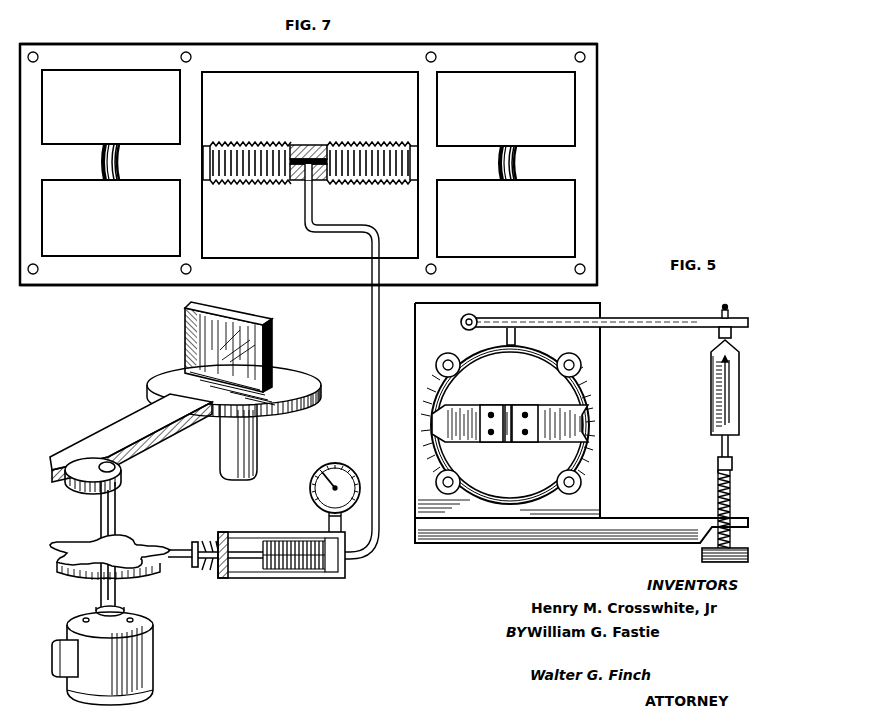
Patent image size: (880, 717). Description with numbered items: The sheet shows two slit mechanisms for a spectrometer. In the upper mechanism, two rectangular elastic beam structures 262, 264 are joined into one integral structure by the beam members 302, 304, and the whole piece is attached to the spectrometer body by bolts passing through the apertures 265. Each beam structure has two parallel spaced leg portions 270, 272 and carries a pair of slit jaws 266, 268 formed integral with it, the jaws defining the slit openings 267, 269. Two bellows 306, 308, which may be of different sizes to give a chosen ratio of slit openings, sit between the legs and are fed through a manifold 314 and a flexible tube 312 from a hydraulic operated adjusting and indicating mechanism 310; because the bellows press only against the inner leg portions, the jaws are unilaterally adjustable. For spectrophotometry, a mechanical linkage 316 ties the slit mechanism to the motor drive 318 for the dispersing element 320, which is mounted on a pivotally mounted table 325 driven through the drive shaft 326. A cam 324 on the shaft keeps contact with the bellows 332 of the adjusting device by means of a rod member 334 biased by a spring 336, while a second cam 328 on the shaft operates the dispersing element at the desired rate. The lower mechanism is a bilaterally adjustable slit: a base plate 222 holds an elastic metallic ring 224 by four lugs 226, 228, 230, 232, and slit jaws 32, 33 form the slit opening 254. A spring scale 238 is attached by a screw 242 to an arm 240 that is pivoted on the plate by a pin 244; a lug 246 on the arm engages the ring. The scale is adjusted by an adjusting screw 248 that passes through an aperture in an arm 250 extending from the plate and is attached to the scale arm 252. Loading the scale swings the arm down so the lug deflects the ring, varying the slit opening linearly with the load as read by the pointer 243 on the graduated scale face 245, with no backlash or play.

In FIG. 7, the apertures 265 is at (181, 57).
In FIG. 7, the beam member 302 is at (330, 63).
In FIG. 7, the beam member 304 is at (330, 278).
In FIG. 7, the slit jaws 266 is at (103, 162).
In FIG. 7, the slit opening 267 is at (110, 145).
In FIG. 7, the slit jaws 268 is at (120, 162).
In FIG. 7, the slit opening 269 is at (504, 146).
In FIG. 7, the leg portion 270 is at (42, 207).
In FIG. 7, the leg portion 272 is at (180, 207).
In FIG. 7, the elastic beam structure 262 is at (203, 205).
In FIG. 7, the elastic beam structure 264 is at (418, 205).
In FIG. 7, the bellows 306 is at (233, 145).
In FIG. 7, the bellows 308 is at (374, 145).
In FIG. 7, the manifold 314 is at (299, 182).
In FIG. 7, the flexible tube 312 is at (372, 427).
In FIG. 7, the dispersing element 320 is at (305, 370).
In FIG. 7, the table 325 is at (145, 432).
In FIG. 7, the second cam 328 is at (122, 470).
In FIG. 7, the drive shaft 326 is at (100, 590).
In FIG. 7, the cam 324 is at (128, 545).
In FIG. 7, the mechanical linkage 316 is at (153, 568).
In FIG. 7, the rod member 334 is at (196, 542).
In FIG. 7, the spring 336 is at (213, 570).
In FIG. 7, the bellows 332 is at (292, 532).
In FIG. 7, the hydraulic operated adjusting and indicating mechanism 310 is at (294, 580).
In FIG. 7, the motor drive 318 is at (150, 637).
In FIG. 5, the base plate 222 is at (596, 391).
In FIG. 5, the elastic metallic ring 224 is at (590, 382).
In FIG. 5, the lug 232 is at (584, 363).
In FIG. 5, the lug 226 is at (570, 494).
In FIG. 5, the lug 228 is at (453, 494).
In FIG. 5, the lug 230 is at (441, 358).
In FIG. 5, the lug 246 is at (516, 340).
In FIG. 5, the arm 240 is at (637, 318).
In FIG. 5, the pin 244 is at (460, 321).
In FIG. 5, the arm 250 is at (641, 518).
In FIG. 5, the slit opening 254 is at (508, 404).
In FIG. 5, the slit jaw 32 is at (490, 405).
In FIG. 5, the slit jaw 33 is at (538, 405).
In FIG. 5, the spring scale 238 is at (740, 407).
In FIG. 5, the screw 242 is at (738, 333).
In FIG. 5, the pointer 243 is at (733, 362).
In FIG. 5, the graduated scale face 245 is at (712, 398).
In FIG. 5, the scale arm 252 is at (730, 447).
In FIG. 5, the adjusting screw 248 is at (732, 540).